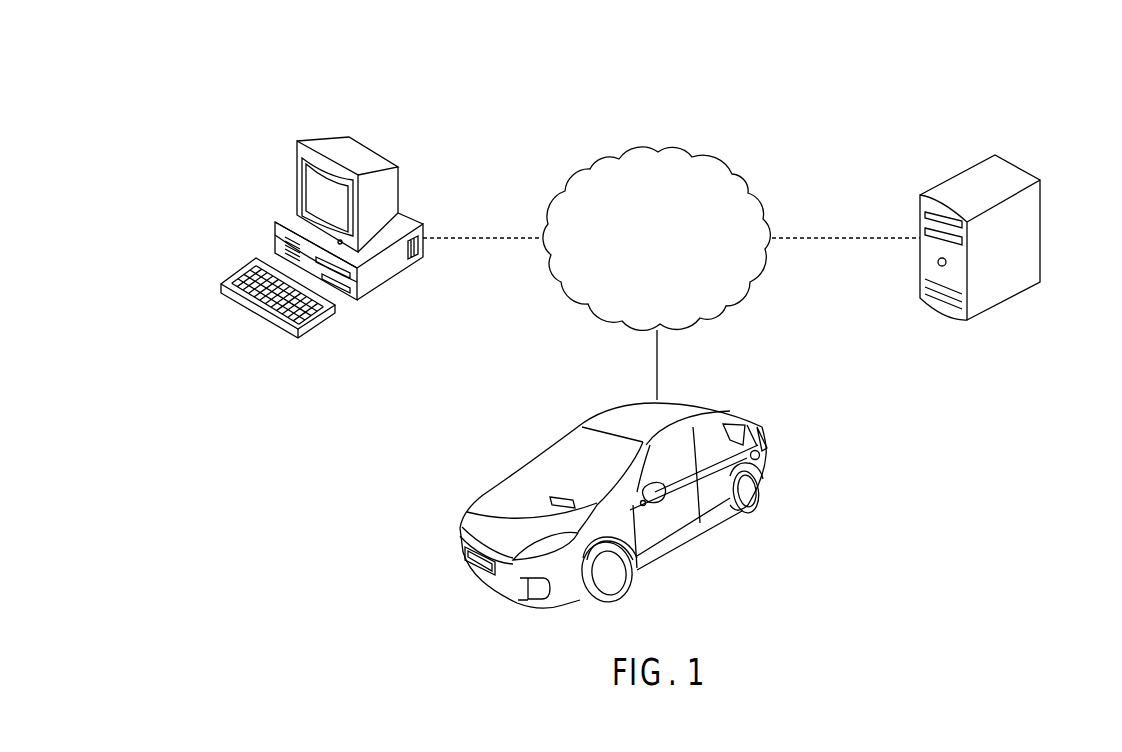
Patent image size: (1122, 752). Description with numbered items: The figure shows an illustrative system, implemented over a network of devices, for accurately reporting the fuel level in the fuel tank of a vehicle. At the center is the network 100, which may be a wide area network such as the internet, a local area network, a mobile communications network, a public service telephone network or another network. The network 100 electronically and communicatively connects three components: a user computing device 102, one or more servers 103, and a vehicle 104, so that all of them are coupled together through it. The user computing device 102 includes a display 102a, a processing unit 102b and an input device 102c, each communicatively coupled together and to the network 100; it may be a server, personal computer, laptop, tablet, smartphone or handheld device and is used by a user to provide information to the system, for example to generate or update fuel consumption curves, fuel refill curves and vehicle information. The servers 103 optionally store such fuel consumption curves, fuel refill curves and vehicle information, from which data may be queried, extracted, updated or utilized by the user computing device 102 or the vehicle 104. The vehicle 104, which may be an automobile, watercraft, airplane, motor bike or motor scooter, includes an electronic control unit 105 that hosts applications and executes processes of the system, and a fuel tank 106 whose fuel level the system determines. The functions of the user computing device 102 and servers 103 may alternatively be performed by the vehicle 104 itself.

The network 100 is at (733, 172).
The user computing device 102 is at (342, 198).
The display 102a is at (295, 152).
The processing unit 102b is at (377, 275).
The input device 102c is at (323, 317).
The server 103 is at (1042, 148).
The vehicle 104 is at (643, 484).
The electronic control unit 105 is at (565, 496).
The fuel tank 106 is at (760, 456).